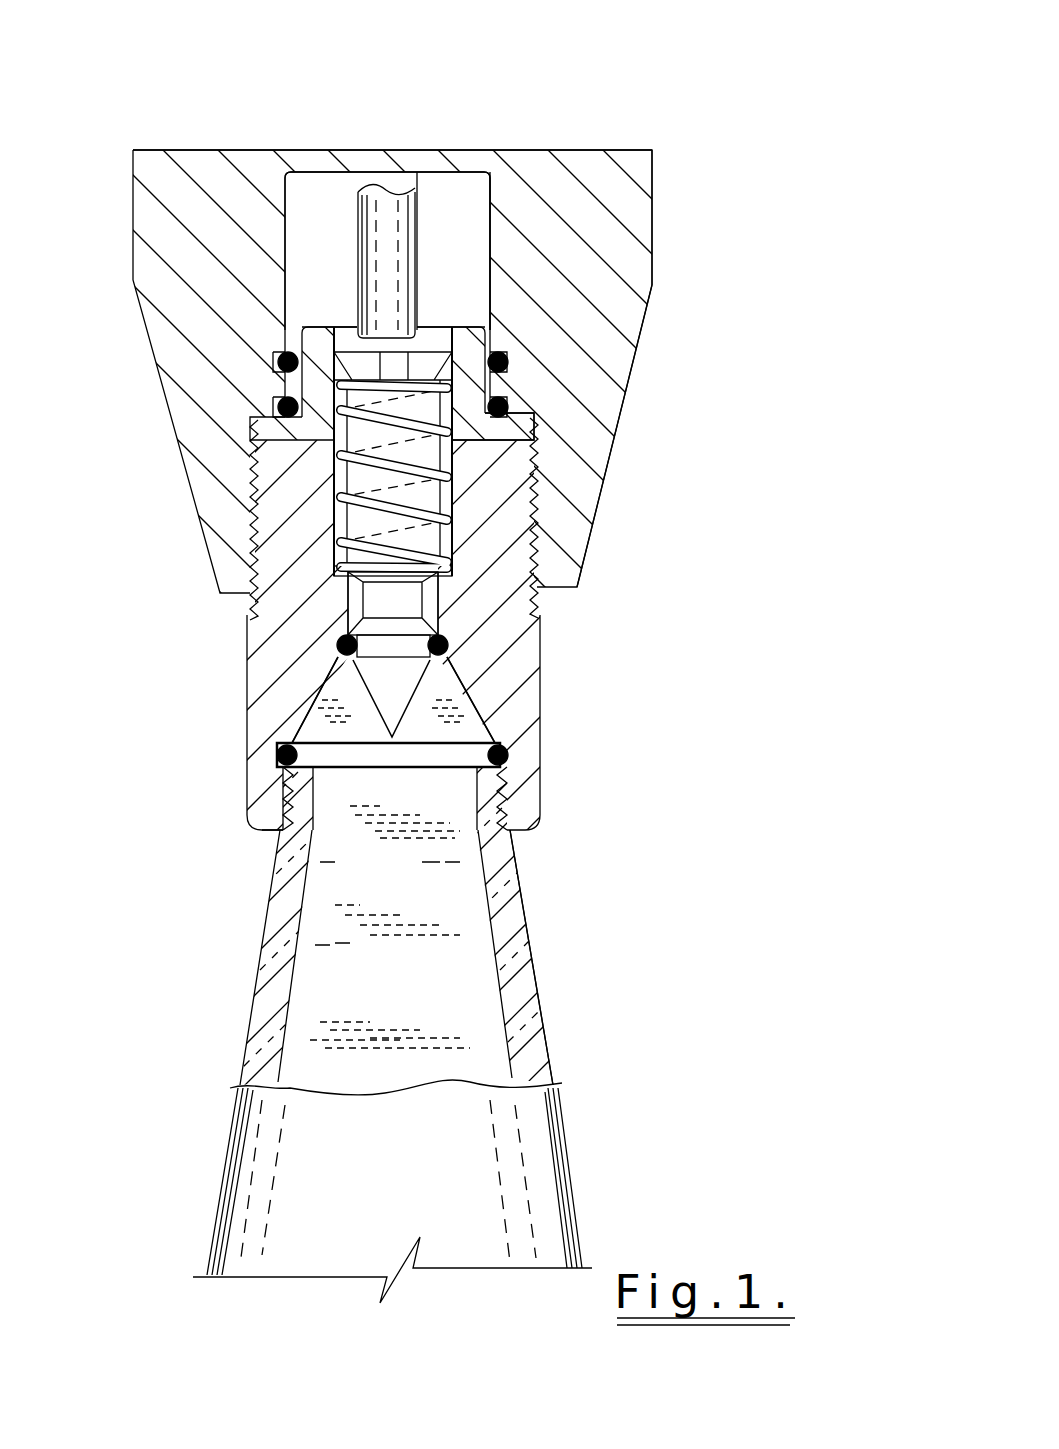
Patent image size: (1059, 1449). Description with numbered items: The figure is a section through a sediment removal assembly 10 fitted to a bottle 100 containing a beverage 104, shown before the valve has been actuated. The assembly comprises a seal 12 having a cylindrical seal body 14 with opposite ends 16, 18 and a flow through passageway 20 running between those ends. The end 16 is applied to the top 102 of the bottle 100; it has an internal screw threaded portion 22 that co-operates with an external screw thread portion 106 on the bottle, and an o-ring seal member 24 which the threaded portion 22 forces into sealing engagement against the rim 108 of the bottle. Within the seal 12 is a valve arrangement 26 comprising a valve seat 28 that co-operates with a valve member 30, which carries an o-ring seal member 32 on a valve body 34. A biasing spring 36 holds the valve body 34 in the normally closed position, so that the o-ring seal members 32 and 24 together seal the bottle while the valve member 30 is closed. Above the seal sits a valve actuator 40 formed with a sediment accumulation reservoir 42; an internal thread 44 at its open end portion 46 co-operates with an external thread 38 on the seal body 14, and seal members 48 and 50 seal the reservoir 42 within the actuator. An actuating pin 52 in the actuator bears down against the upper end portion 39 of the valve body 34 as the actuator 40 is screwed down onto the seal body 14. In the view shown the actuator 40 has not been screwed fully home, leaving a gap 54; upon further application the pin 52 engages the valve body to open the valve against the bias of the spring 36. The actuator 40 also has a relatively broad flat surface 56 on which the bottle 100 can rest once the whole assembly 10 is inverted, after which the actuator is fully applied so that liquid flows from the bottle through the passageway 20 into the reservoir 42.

The sediment removal assembly 10 is at (745, 248).
The seal 12 is at (615, 742).
The cylindrical seal body 14 is at (247, 735).
The end 16 is at (262, 848).
The end 18 is at (470, 312).
The flow through passageway 20 is at (310, 430).
The internal screw threaded portion 22 is at (285, 828).
The o-ring seal member 24 is at (288, 795).
The valve arrangement 26 is at (482, 547).
The valve seat 28 is at (448, 646).
The valve member 30 is at (455, 498).
The o-ring seal member 32 is at (340, 645).
The valve body 34 is at (333, 477).
The biasing spring 36 is at (270, 410).
The external thread 38 is at (248, 613).
The upper end portion 39 is at (341, 326).
The valve actuator 40 is at (655, 118).
The reservoir 42 is at (447, 205).
The internal thread 44 is at (535, 430).
The open end portion 46 is at (630, 555).
The seal member 48 is at (507, 362).
The seal member 50 is at (508, 406).
The actuating pin 52 is at (346, 325).
The gap 54 is at (558, 608).
The flat surface 56 is at (548, 148).
The bottle 100 is at (562, 1153).
The top 102 is at (527, 856).
The beverage 104 is at (472, 1008).
The external screw thread portion 106 is at (462, 808).
The rim 108 is at (508, 746).